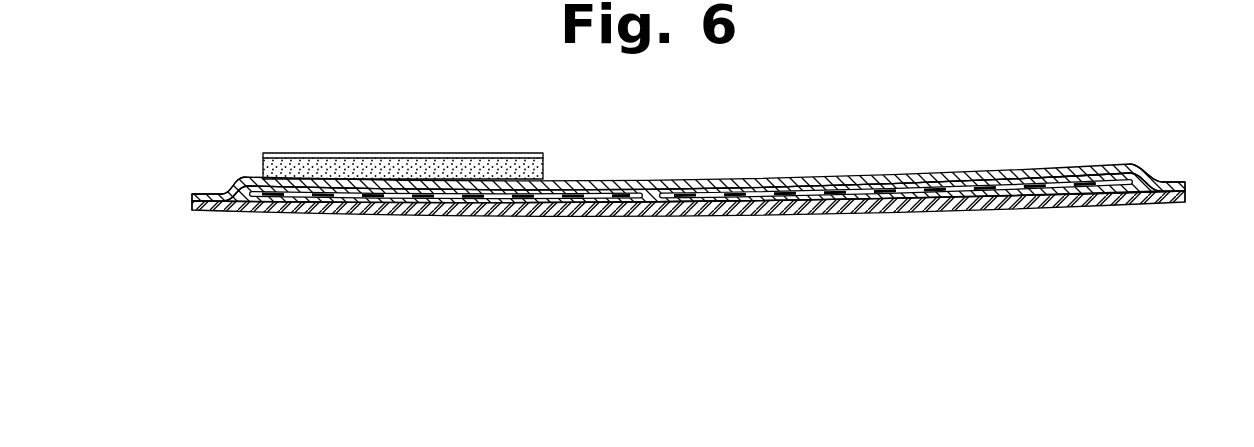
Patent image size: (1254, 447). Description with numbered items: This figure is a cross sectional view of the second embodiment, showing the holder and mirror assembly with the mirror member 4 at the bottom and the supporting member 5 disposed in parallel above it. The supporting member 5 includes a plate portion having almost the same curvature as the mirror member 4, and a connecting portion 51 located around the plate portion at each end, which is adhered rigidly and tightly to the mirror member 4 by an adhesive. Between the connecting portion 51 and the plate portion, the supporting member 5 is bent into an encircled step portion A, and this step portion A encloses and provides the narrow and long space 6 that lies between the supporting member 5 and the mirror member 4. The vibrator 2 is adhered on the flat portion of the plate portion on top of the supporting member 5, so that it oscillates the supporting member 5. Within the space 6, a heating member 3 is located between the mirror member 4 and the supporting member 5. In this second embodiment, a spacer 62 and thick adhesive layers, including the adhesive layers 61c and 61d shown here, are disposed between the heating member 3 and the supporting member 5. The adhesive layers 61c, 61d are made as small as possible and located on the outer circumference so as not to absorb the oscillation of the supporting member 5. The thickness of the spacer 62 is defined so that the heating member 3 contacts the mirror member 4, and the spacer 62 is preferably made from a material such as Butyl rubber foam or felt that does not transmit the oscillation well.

The vibrator 2 is at (398, 168).
The heating member 3 is at (903, 200).
The mirror member 4 is at (1090, 212).
The supporting member 5 is at (929, 168).
The connecting portion 51 is at (200, 192).
The space 6 is at (880, 188).
The thick adhesive layer 61c is at (343, 197).
The thick adhesive layer 61d is at (1043, 188).
The spacer 62 is at (793, 182).
The step portion A is at (223, 187).